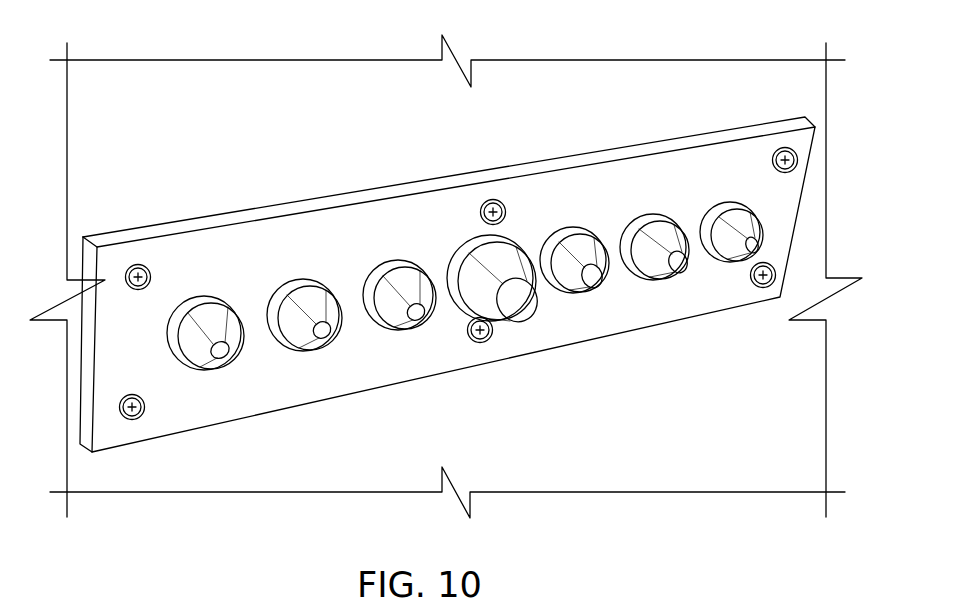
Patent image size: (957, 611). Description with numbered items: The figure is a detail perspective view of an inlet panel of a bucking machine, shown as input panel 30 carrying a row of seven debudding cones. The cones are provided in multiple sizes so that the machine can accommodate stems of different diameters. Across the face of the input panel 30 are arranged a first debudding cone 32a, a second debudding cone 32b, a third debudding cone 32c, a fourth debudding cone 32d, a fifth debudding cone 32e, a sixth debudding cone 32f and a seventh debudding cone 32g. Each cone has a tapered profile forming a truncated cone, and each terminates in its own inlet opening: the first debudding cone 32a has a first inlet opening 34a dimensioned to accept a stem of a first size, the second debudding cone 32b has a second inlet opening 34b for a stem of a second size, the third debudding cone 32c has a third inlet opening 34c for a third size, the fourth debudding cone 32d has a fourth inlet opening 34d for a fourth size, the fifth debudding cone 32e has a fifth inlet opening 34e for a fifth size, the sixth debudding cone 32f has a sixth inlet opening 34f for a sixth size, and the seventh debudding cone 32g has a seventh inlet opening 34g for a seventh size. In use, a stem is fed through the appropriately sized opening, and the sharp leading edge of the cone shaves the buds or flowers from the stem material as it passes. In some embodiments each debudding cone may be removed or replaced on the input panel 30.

The input panel 30 is at (176, 395).
The first debudding cone 32a is at (199, 297).
The second debudding cone 32b is at (301, 277).
The third debudding cone 32c is at (396, 258).
The fourth debudding cone 32d is at (470, 248).
The fifth debudding cone 32e is at (572, 233).
The sixth debudding cone 32f is at (653, 215).
The seventh debudding cone 32g is at (728, 203).
The first inlet opening 34a is at (231, 355).
The second inlet opening 34b is at (331, 336).
The third inlet opening 34c is at (425, 315).
The fourth inlet opening 34d is at (521, 304).
The fifth inlet opening 34e is at (599, 278).
The sixth inlet opening 34f is at (686, 267).
The seventh inlet opening 34g is at (771, 249).